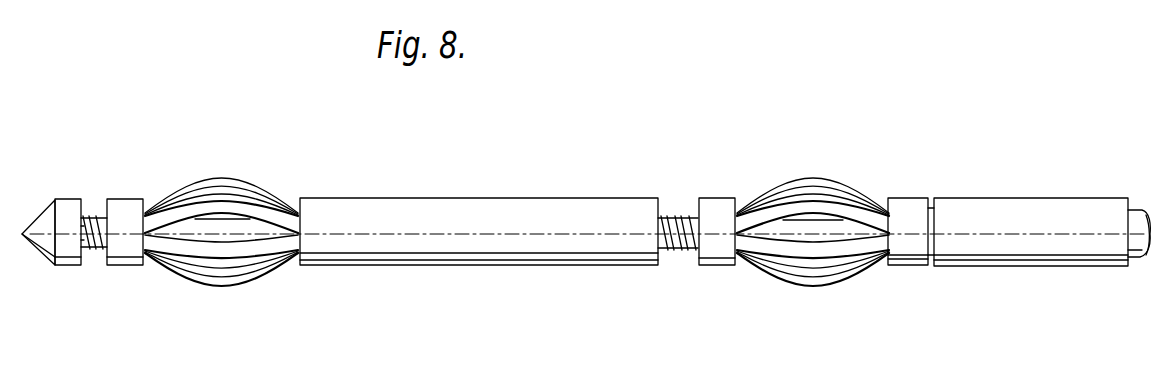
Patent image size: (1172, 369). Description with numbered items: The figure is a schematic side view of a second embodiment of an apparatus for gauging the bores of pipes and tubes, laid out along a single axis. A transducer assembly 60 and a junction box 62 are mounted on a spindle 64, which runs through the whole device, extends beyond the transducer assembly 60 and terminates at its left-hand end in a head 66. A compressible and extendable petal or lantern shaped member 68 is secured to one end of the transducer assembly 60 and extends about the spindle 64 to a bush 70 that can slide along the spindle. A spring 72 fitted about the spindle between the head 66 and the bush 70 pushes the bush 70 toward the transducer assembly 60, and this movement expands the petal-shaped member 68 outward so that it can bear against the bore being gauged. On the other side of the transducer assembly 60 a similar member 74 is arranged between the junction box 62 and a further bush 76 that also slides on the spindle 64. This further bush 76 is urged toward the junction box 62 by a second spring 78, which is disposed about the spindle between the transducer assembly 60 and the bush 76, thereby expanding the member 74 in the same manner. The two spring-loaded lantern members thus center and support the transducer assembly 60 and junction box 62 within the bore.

The transducer assembly 60 is at (557, 210).
The junction box 62 is at (977, 207).
The spindle 64 is at (237, 232).
The head 66 is at (77, 266).
The petal or lantern shaped member 68 is at (209, 207).
The bush 70 is at (133, 264).
The spring 72 is at (93, 215).
The member 74 is at (814, 178).
The further bush 76 is at (723, 202).
The spring 78 is at (672, 215).